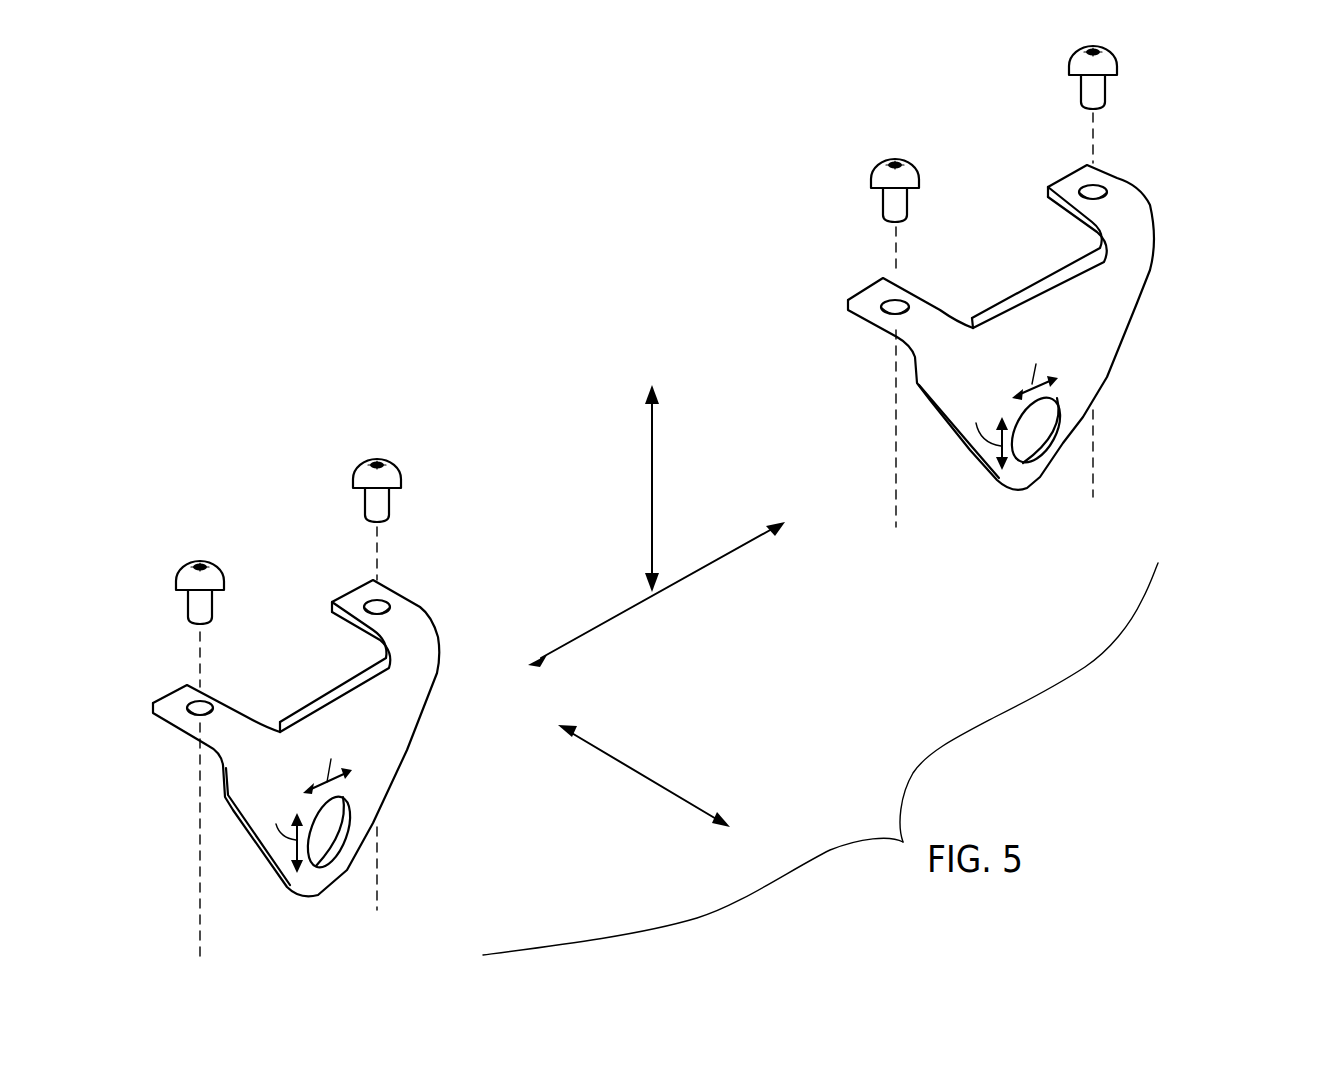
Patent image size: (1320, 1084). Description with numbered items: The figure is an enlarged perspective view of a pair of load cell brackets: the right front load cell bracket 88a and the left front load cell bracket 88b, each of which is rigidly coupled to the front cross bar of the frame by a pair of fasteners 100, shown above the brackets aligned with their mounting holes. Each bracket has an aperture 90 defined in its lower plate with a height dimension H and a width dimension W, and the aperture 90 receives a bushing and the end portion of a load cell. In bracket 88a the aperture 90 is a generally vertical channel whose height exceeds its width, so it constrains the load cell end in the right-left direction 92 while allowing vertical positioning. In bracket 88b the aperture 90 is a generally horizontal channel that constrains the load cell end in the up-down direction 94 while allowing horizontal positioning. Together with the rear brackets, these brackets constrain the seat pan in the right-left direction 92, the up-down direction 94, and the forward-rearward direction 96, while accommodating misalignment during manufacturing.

The right front load cell bracket 88a is at (441, 633).
The left front load cell bracket 88b is at (1157, 236).
The aperture 90 is at (357, 821).
The right-left direction 92 is at (705, 567).
The up-down direction 94 is at (653, 488).
The forward-rearward direction 96 is at (642, 772).
The fasteners 100 is at (380, 507).